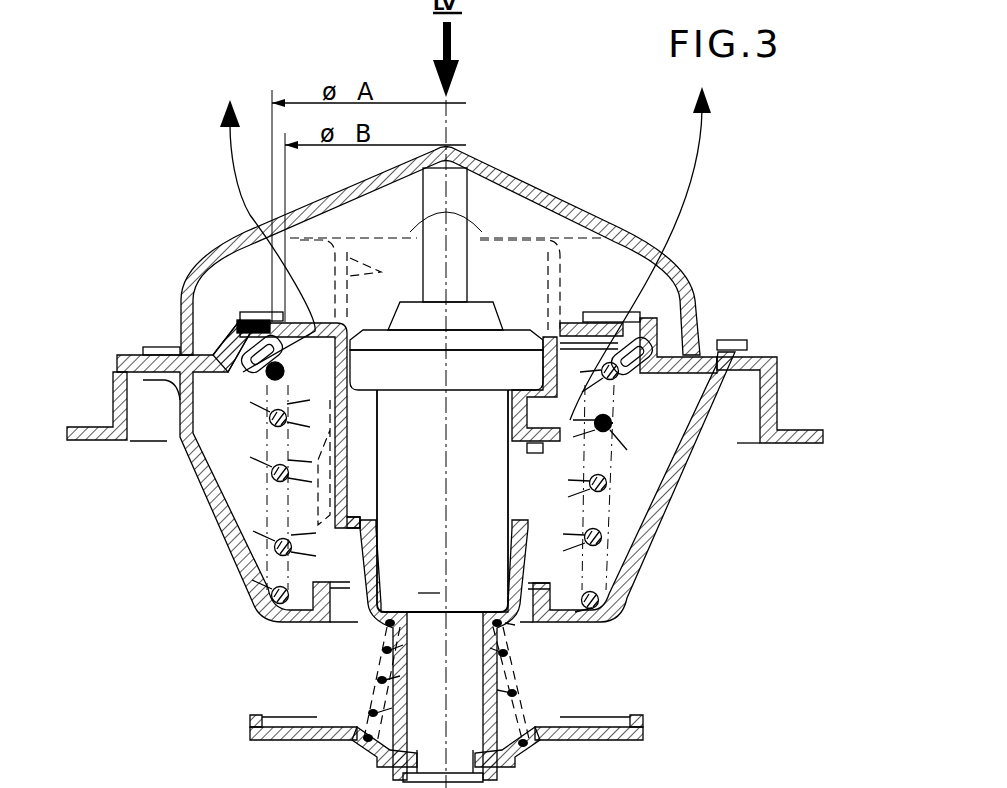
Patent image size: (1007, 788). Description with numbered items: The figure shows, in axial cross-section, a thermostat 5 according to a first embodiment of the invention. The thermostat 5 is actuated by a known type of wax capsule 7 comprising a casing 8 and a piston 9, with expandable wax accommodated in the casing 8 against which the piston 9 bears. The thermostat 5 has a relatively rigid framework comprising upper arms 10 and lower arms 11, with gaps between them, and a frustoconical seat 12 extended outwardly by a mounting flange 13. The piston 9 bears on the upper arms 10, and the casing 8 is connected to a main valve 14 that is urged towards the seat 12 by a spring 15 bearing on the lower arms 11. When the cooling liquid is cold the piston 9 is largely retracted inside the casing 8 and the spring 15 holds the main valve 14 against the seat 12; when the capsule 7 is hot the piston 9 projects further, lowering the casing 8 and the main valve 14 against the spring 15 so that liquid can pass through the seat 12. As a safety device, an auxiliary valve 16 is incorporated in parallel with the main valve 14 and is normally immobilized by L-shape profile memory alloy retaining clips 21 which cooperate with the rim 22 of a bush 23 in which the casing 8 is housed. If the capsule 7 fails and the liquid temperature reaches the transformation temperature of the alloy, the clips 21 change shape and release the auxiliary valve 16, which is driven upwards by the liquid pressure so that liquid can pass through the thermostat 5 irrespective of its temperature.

The thermostat 5 is at (705, 265).
The wax capsule 7 is at (518, 500).
The casing 8 is at (444, 585).
The piston 9 is at (485, 215).
The upper arms 10 is at (575, 213).
The lower arms 11 is at (700, 457).
The frustoconical seat 12 is at (680, 340).
The mounting flange 13 is at (806, 430).
The main valve 14 is at (243, 371).
The spring 15 is at (268, 478).
The auxiliary valve 16 is at (335, 311).
The retaining clips 21 is at (347, 487).
The rim 22 is at (363, 511).
The bush 23 is at (377, 617).